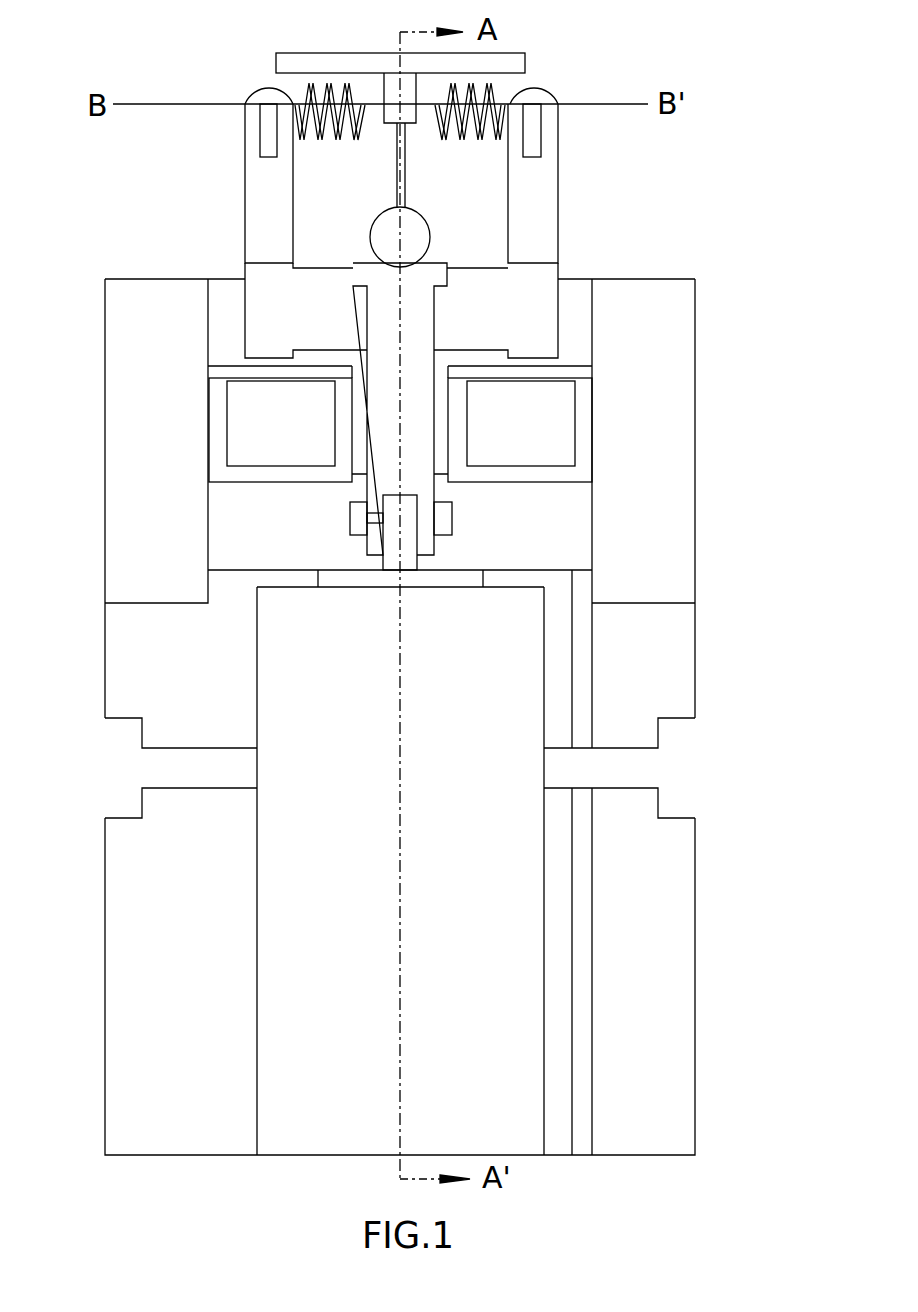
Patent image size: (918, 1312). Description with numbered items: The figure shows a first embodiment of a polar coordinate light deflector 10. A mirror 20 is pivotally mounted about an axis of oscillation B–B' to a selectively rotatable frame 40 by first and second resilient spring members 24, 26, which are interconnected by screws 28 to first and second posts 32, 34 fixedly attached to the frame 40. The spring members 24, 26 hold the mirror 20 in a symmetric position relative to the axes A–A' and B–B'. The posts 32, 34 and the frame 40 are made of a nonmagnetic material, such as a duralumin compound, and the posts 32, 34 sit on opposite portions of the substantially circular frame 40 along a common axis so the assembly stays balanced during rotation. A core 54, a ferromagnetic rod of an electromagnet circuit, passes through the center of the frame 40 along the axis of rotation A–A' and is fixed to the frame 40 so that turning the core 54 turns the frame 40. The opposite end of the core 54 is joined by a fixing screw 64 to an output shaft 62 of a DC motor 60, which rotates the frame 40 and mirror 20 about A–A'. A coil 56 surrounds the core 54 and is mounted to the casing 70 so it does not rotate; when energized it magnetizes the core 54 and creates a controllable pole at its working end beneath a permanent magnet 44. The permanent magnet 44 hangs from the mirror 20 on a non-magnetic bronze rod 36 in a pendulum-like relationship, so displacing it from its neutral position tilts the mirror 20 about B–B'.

The deflector 10 is at (747, 151).
The mirror 20 is at (527, 60).
The first resilient spring member 24 is at (309, 140).
The second resilient spring member 26 is at (486, 138).
The screws 28 is at (253, 90).
The first post 32 is at (253, 190).
The second post 34 is at (542, 203).
The bronze rod 36 is at (407, 155).
The frame 40 is at (277, 295).
The permanent magnet 44 is at (428, 223).
The core 54 is at (422, 417).
The coil 56 is at (263, 435).
The DC motor 60 is at (490, 996).
The output shaft 62 is at (437, 544).
The fixing screw 64 is at (350, 521).
The casing 70 is at (147, 645).